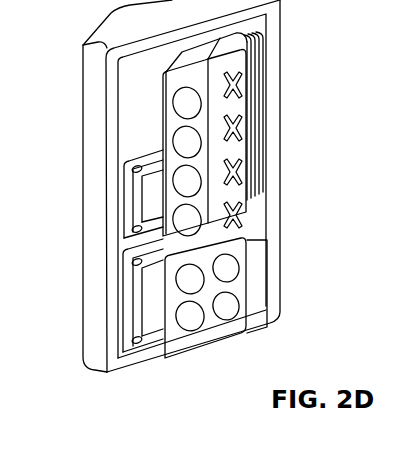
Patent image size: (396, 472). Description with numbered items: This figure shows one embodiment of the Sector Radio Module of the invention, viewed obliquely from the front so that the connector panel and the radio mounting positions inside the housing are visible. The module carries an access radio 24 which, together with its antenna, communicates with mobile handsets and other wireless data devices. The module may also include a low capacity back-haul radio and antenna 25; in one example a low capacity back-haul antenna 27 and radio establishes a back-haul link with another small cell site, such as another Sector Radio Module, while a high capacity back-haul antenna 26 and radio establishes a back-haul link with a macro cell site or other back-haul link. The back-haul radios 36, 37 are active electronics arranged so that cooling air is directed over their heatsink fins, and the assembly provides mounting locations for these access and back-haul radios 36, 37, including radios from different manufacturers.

The access radio 24 is at (253, 152).
The low capacity back-haul radio and antenna 25 is at (187, 185).
The high capacity back-haul antenna 26 is at (232, 272).
The low capacity back-haul antenna 27 is at (245, 130).
The back-haul radio 36 is at (153, 208).
The back-haul radio 37 is at (150, 292).